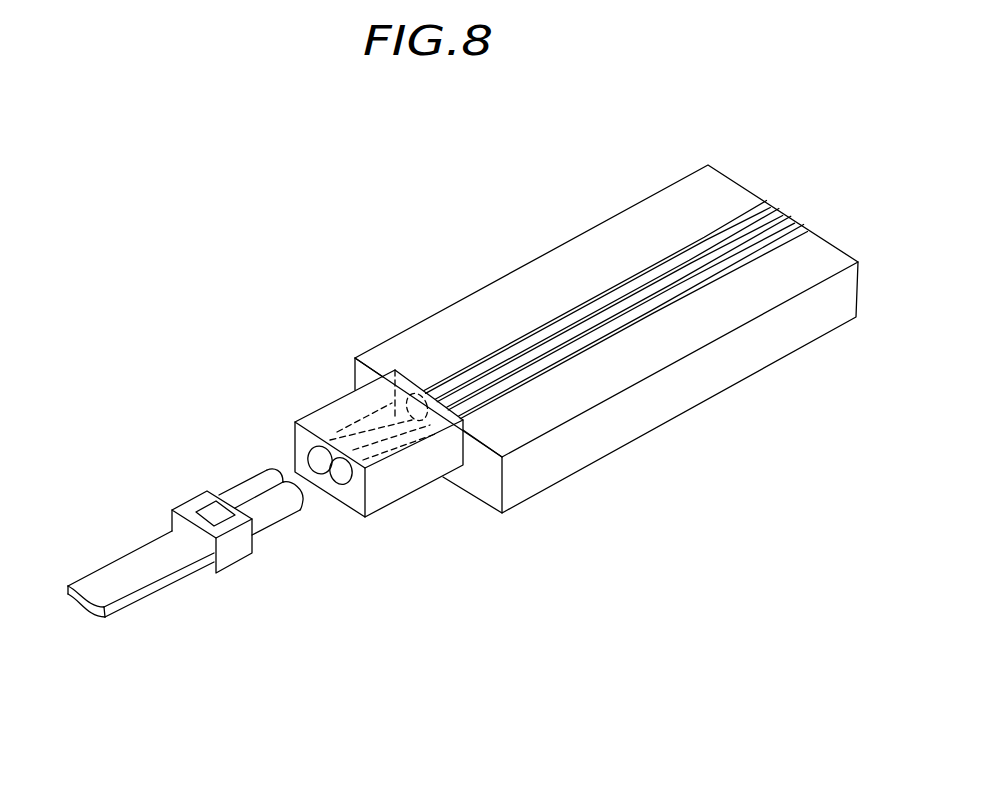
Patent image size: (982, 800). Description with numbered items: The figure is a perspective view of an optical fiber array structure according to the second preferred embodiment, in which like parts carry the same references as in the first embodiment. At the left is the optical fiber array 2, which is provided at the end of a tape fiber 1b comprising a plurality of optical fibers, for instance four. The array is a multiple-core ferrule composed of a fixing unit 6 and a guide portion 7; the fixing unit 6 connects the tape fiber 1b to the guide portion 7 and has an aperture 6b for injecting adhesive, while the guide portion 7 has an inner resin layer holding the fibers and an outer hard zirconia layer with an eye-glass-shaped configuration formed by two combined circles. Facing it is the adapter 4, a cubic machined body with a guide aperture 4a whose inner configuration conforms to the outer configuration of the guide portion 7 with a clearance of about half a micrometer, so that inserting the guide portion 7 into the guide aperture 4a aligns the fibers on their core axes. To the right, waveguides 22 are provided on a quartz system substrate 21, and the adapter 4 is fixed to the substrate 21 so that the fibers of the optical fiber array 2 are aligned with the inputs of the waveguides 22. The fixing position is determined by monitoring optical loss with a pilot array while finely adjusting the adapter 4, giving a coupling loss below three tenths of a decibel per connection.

The optical fiber array 2 is at (255, 518).
The tape fiber 1b is at (100, 574).
The adapter 4 is at (341, 446).
The guide aperture 4a is at (342, 482).
The fixing unit 6 is at (228, 567).
The aperture 6b is at (207, 508).
The guide portion 7 is at (273, 518).
The substrate 21 is at (562, 463).
The waveguides 22 is at (562, 317).